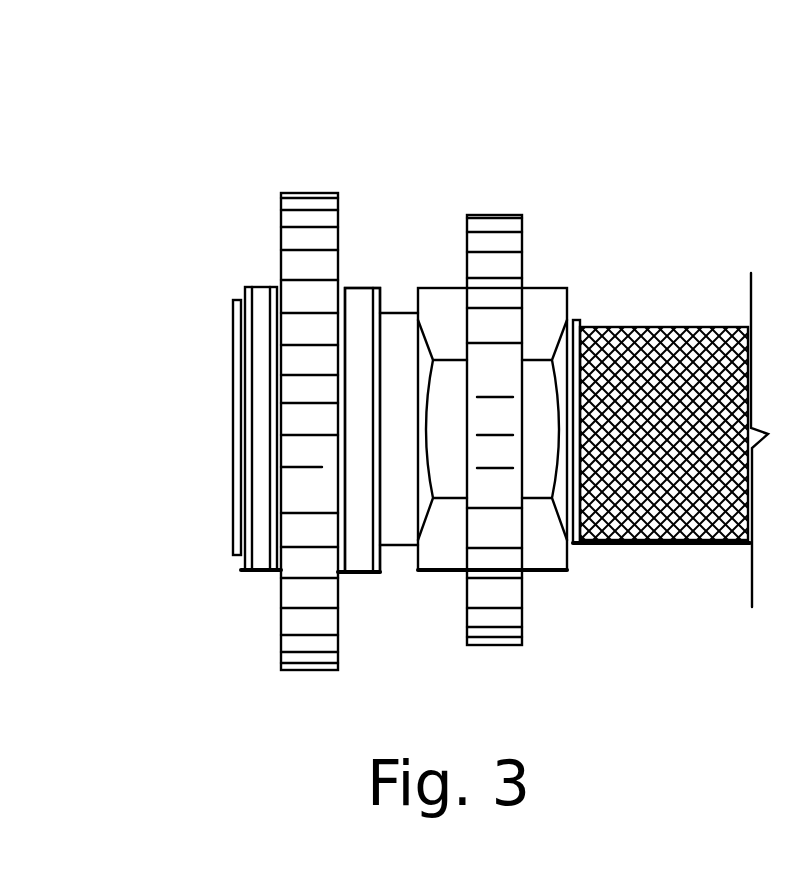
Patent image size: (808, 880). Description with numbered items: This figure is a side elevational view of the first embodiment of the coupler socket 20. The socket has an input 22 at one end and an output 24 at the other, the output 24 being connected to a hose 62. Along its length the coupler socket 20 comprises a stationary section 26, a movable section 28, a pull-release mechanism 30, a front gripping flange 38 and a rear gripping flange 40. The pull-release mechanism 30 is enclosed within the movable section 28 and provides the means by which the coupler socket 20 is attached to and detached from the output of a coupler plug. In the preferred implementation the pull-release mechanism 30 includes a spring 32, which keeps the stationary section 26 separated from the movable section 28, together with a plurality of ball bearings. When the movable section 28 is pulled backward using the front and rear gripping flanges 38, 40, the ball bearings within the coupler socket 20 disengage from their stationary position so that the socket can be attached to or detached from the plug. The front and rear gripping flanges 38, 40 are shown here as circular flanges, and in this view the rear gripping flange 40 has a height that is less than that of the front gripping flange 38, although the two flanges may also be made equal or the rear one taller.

The coupler socket 20 is at (612, 246).
The input 22 is at (214, 413).
The output 24 is at (573, 567).
The stationary section 26 is at (549, 300).
The movable section 28 is at (268, 297).
The pull-release mechanism 30 is at (352, 295).
The spring 32 is at (362, 430).
The front gripping flange 38 is at (305, 197).
The rear gripping flange 40 is at (492, 215).
The hose 62 is at (654, 370).